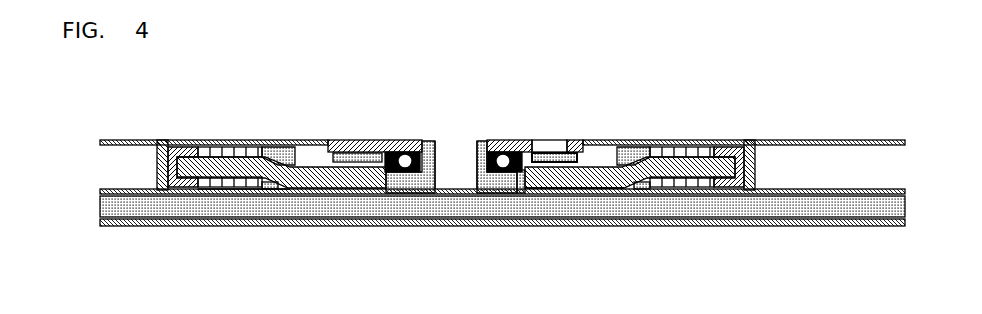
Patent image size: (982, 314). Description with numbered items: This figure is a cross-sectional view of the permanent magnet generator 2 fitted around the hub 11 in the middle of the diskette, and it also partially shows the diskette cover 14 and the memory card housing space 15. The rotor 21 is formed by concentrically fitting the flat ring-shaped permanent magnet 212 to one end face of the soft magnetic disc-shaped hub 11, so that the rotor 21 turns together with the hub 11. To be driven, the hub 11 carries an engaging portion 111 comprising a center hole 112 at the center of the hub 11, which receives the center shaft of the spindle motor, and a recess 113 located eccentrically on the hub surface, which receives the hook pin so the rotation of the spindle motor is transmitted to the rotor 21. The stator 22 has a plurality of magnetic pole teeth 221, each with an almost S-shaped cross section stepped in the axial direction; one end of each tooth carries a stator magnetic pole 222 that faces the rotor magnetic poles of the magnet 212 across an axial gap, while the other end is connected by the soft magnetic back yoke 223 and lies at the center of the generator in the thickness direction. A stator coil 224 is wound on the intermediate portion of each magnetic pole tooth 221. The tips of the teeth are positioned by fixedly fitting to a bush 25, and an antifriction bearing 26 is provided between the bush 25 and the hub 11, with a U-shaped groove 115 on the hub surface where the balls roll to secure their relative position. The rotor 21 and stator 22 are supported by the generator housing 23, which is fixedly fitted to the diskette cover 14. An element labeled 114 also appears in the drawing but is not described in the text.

The permanent magnet generator 2 is at (740, 138).
The hub 11 is at (387, 138).
The diskette cover 14 is at (117, 140).
The memory card housing space 15 is at (725, 205).
The rotor 21 is at (375, 108).
The stator 22 is at (456, 176).
The generator housing 23 is at (247, 190).
The bush 25 is at (477, 178).
The antifriction bearing 26 is at (518, 192).
The engaging portion 111 is at (516, 108).
The center hole 112 is at (447, 138).
The recess 113 is at (540, 138).
The seal 114 is at (559, 119).
The U-shaped groove 115 is at (457, 162).
The flat ring-shaped permanent magnet 212 is at (357, 120).
The magnetic pole tooth 221 is at (597, 187).
The stator magnetic pole 222 is at (537, 190).
The back yoke 223 is at (168, 140).
The stator coil 224 is at (232, 140).